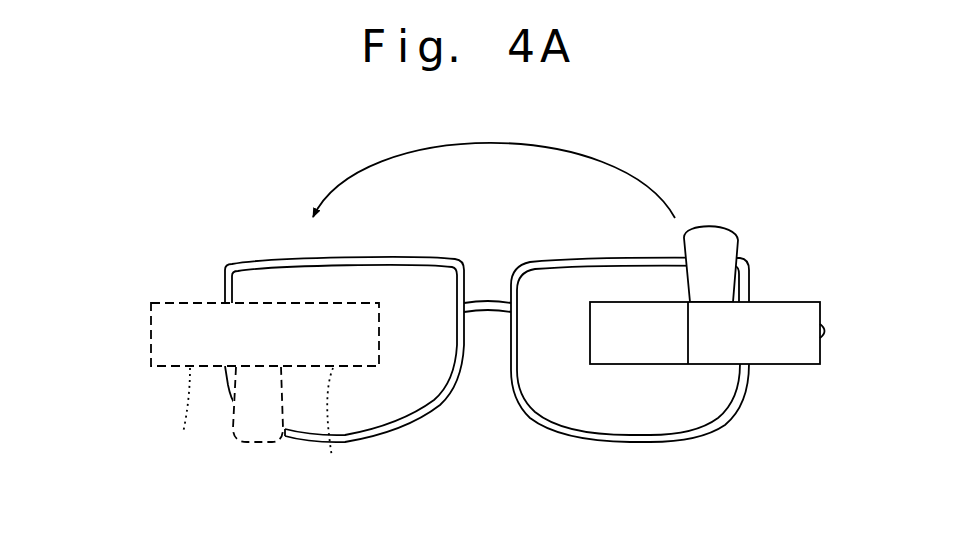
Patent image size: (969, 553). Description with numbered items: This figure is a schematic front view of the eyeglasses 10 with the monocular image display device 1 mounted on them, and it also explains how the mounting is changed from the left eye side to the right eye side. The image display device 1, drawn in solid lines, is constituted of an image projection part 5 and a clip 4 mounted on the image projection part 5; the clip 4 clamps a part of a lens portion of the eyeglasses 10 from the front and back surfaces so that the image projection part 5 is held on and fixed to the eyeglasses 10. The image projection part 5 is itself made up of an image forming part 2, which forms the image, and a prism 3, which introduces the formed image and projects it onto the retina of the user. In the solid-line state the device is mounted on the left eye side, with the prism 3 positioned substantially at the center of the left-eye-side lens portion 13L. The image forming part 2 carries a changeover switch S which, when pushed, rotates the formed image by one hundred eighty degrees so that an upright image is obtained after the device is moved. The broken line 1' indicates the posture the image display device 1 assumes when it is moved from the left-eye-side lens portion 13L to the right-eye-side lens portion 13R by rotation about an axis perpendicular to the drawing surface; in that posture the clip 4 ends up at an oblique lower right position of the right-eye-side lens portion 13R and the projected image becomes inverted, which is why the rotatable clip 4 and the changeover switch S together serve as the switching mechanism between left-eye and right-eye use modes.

The image display device 1 is at (705, 258).
The broken line (image display device posture) 1' is at (210, 389).
The image forming part 2 is at (758, 365).
The prism 3 is at (652, 364).
The clip 4 is at (711, 212).
The image projection part 5 is at (800, 393).
The eyeglasses 10 is at (482, 270).
The right-eye-side lens portion 13R is at (395, 410).
The left-eye-side lens portion 13L is at (607, 415).
The changeover switch S is at (839, 334).